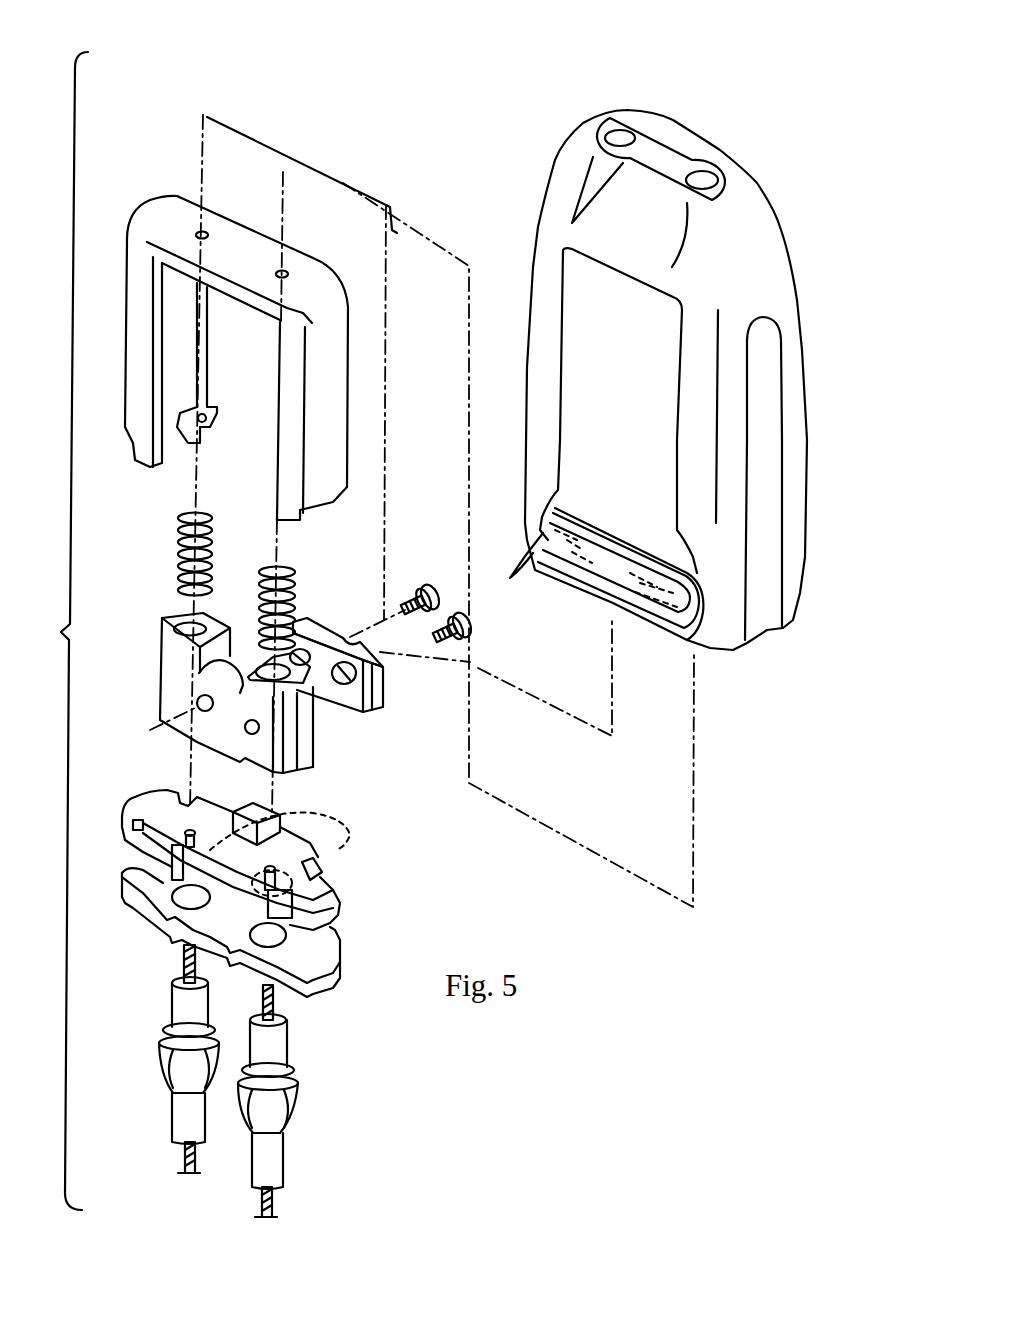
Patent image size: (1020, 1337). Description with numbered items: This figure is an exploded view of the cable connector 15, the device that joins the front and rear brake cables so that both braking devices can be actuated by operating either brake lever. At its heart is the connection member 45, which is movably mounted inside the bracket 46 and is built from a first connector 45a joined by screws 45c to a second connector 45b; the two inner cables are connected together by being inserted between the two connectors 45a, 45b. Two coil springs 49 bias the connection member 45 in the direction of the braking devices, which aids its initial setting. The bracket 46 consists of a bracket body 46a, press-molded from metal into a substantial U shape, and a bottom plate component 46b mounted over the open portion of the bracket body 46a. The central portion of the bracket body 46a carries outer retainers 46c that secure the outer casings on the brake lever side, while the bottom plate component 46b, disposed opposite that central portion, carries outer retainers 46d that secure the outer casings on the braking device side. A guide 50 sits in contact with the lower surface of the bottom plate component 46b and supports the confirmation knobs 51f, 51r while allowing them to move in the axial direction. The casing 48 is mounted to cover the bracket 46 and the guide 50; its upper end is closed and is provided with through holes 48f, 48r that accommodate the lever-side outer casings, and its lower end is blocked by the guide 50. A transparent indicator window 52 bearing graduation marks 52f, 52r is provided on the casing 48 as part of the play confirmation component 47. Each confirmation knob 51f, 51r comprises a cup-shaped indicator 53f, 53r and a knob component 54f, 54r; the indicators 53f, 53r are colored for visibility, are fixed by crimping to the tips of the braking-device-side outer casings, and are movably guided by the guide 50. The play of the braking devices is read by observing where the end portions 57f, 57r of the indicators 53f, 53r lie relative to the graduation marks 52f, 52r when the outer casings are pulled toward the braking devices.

The cable connector 15 is at (53, 631).
The connection member 45 is at (303, 787).
The first connector 45a is at (185, 673).
The second connector 45b is at (372, 665).
The screws 45c is at (463, 606).
The bracket 46 is at (322, 446).
The bracket body 46a is at (317, 397).
The bottom plate component 46b is at (333, 890).
The outer retainers 46c is at (200, 233).
The outer retainers 46d is at (308, 854).
The play confirmation component 47 is at (614, 580).
The casing 48 is at (757, 296).
The through hole 48f is at (620, 130).
The through hole 48r is at (703, 172).
The coil springs 49 is at (178, 535).
The guide 50 is at (323, 948).
The confirmation knob 51f is at (156, 1066).
The confirmation knob 51r is at (304, 1083).
The indicator window 52 is at (620, 555).
The graduation marks 52f is at (509, 570).
The graduation marks 52r is at (675, 590).
The indicator 53f is at (178, 1002).
The indicator 53r is at (273, 1040).
The knob component 54f is at (178, 1087).
The knob component 54r is at (280, 1128).
The end portion 57f is at (178, 973).
The end portion 57r is at (277, 1020).